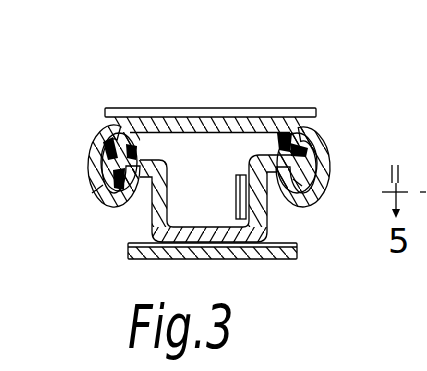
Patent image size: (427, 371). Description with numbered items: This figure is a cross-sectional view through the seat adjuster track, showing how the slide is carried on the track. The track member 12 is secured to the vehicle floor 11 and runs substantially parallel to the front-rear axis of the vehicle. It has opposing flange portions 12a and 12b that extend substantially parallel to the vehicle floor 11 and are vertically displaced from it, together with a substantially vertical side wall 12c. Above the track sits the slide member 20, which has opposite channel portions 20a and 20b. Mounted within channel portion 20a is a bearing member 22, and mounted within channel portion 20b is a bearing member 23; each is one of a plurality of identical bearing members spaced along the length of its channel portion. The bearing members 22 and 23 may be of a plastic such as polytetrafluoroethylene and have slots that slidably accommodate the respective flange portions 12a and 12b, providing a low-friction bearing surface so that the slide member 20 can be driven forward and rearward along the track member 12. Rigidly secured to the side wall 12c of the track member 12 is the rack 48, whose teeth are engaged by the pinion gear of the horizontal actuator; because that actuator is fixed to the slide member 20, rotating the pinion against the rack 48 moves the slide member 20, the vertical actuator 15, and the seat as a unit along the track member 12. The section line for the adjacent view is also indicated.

The vehicle floor 11 is at (267, 252).
The track member 12 is at (160, 214).
The flange portion 12a is at (102, 131).
The flange portion 12b is at (316, 138).
The side wall 12c is at (263, 218).
The vertical actuator 15 is at (280, 97).
The slide member 20 is at (168, 130).
The channel portion 20a is at (108, 165).
The channel portion 20b is at (320, 168).
The bearing member 22 is at (92, 193).
The bearing member 23 is at (302, 186).
The rack 48 is at (239, 199).